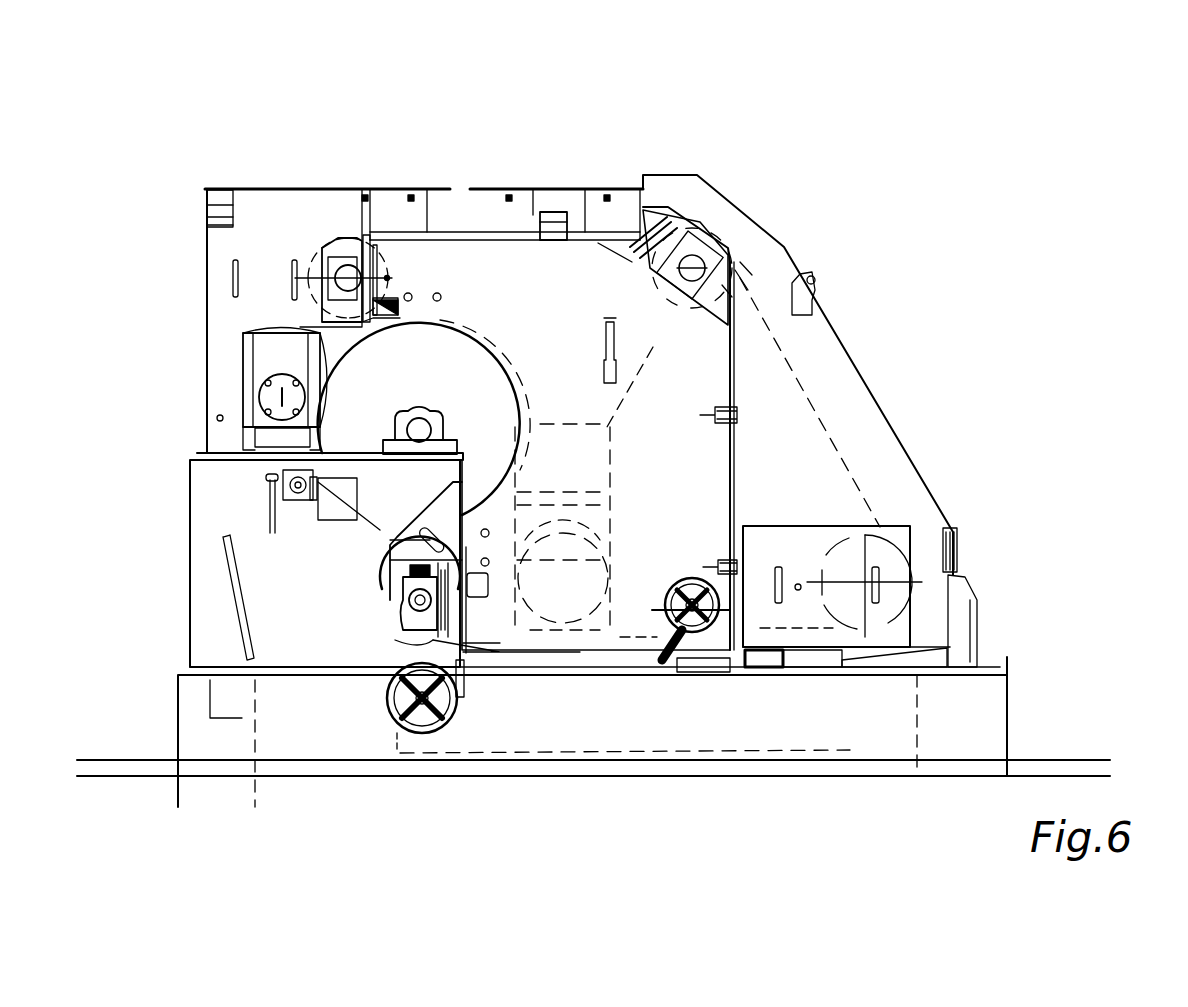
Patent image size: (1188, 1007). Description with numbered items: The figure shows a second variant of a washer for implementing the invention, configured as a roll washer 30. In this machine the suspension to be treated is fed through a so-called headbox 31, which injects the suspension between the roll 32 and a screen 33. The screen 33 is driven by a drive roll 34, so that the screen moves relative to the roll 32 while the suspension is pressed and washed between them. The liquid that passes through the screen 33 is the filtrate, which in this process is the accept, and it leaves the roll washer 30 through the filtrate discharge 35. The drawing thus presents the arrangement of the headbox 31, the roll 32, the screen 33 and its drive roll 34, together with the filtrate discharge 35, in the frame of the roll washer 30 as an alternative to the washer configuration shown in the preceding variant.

The roll washer 30 is at (631, 124).
The headbox 31 is at (347, 262).
The roll 32 is at (421, 365).
The screen 33 is at (535, 232).
The drive roll 34 is at (395, 625).
The filtrate discharge 35 is at (575, 607).